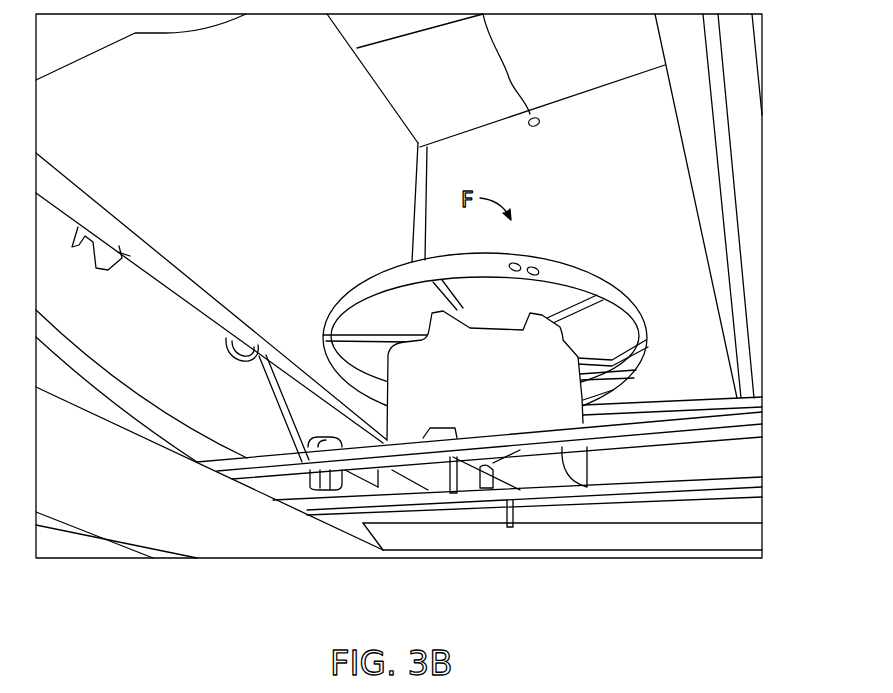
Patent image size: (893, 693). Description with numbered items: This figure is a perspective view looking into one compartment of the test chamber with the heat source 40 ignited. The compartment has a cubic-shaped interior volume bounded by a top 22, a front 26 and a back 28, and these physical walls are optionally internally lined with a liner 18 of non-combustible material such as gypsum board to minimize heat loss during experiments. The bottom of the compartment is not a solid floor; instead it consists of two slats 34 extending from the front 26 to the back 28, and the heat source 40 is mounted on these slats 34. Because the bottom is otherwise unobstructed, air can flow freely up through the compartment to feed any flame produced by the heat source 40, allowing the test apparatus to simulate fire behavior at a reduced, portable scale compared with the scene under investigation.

The liner 18 is at (188, 152).
The top 22 is at (457, 116).
The front 26 is at (745, 178).
The back 28 is at (140, 253).
The slats 34 is at (762, 418).
The heat source 40 is at (323, 335).